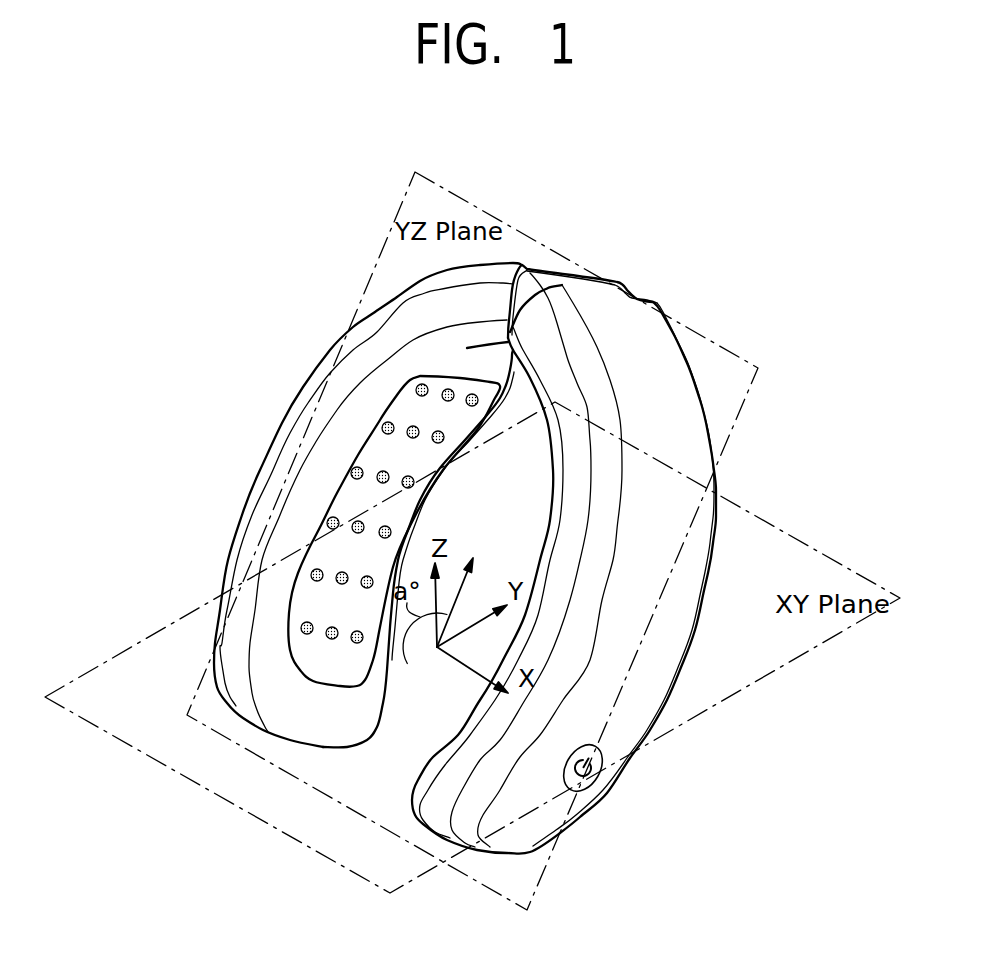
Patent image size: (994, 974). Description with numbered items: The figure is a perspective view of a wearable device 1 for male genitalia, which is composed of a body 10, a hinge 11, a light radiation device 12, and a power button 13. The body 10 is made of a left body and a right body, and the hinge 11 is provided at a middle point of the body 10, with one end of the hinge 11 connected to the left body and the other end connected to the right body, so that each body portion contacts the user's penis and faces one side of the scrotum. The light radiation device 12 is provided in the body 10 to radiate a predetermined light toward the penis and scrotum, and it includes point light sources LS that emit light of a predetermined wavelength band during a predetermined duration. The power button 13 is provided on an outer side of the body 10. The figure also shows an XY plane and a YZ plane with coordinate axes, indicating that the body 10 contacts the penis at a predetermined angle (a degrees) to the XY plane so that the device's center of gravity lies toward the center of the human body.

The wearable device for male genitalia 1 is at (296, 313).
The body 10 is at (852, 952).
The hinge 11 is at (543, 278).
The light radiation device 12 is at (313, 522).
The power button 13 is at (595, 770).
The point light sources LS is at (353, 473).